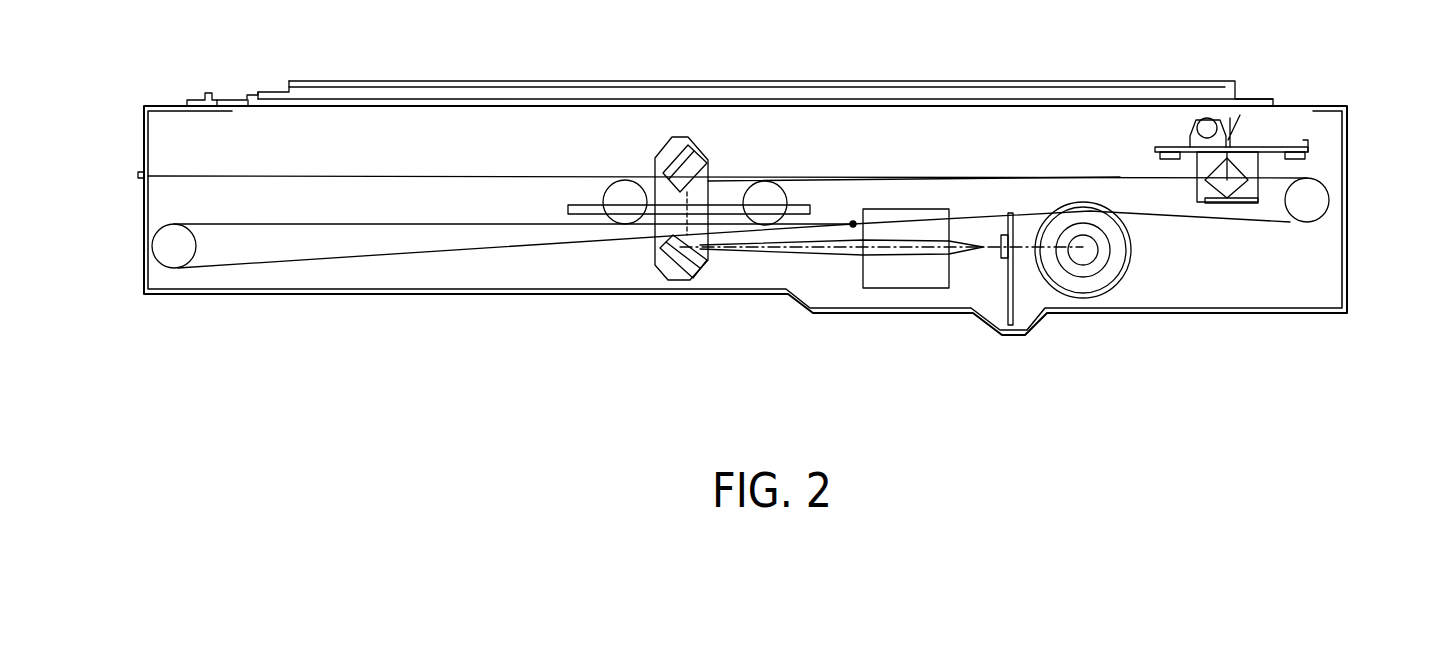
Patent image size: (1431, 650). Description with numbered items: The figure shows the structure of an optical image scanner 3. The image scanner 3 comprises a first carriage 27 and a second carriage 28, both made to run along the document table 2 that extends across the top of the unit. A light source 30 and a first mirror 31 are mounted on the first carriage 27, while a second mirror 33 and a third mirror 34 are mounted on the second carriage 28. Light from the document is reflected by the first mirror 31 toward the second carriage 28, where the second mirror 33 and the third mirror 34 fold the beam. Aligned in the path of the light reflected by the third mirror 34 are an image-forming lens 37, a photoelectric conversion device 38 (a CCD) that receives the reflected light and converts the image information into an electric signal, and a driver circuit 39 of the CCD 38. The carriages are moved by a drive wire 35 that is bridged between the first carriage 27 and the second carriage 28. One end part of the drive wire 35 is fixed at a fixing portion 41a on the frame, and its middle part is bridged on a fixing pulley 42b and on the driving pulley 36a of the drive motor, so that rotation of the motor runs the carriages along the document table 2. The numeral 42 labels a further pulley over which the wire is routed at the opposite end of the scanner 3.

The document table 2 is at (1010, 99).
The image scanner 3 is at (1350, 185).
The first carriage 27 is at (1297, 147).
The second carriage 28 is at (807, 195).
The light source 30 is at (1205, 118).
The first mirror 31 is at (1247, 163).
The second mirror 33 is at (692, 166).
The third mirror 34 is at (678, 278).
The drive wire 35 is at (1218, 217).
The driving pulley 36a is at (1093, 297).
The image-forming lens 37 is at (903, 288).
The photoelectric conversion device 38 is at (1000, 258).
The driver circuit 39 is at (1008, 322).
The fixing portion 41a is at (140, 178).
The pulley 42 is at (175, 262).
The fixing pulley 42b is at (853, 222).